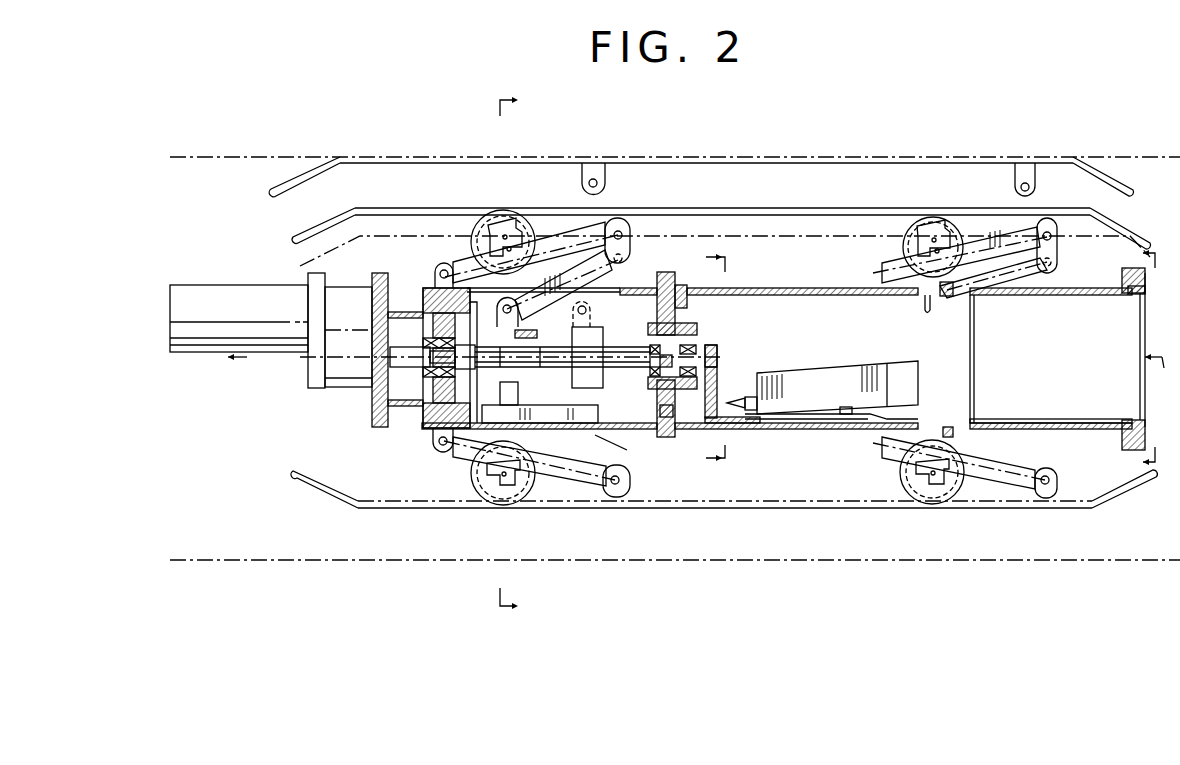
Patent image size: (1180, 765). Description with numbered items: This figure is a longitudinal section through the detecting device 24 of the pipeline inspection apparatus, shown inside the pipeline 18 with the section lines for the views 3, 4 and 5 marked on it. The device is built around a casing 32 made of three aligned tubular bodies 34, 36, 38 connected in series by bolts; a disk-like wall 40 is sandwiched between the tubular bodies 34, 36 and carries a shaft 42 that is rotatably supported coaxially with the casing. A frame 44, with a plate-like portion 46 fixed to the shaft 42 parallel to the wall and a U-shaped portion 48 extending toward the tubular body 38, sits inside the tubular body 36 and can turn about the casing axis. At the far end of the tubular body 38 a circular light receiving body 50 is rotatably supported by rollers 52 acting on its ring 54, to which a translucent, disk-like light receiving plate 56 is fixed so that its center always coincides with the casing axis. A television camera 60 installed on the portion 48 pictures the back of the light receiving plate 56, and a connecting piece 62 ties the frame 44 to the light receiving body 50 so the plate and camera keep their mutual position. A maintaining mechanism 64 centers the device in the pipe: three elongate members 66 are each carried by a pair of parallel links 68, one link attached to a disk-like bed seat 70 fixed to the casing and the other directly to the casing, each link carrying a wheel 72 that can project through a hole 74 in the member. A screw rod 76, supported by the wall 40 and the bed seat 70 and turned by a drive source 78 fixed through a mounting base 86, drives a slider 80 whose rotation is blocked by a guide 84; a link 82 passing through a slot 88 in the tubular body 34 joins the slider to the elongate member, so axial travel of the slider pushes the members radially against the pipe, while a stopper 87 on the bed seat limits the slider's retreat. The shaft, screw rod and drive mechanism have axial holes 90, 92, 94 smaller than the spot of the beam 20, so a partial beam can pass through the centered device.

The section line 3- 3 is at (706, 359).
The section line 4- 4 is at (1147, 358).
The section line 5- 5 is at (520, 354).
The pipeline 18 is at (255, 163).
The beam 20 is at (250, 358).
The detecting device 24 is at (848, 185).
The casing 32 is at (823, 286).
The tubular body 34 is at (639, 434).
The tubular body 36 is at (833, 429).
The tubular body 38 is at (1063, 429).
The wall 40 is at (662, 271).
The shaft 42 is at (698, 344).
The frame 44 is at (757, 430).
The plate-like portion 46 is at (717, 388).
The U-shaped section portion 48 is at (795, 429).
The light receiving body 50 is at (1149, 333).
The rollers 52 is at (1130, 268).
The ring 54 is at (1130, 296).
The light receiving plate 56 is at (1138, 377).
The television camera 60 is at (848, 373).
The connecting piece 62 is at (1032, 419).
The maintaining mechanism 64 is at (377, 432).
The elongate member 66 is at (367, 157).
The parallel links 68 is at (557, 242).
The bed seat 70 is at (440, 284).
The wheel 72 is at (491, 228).
The hole 74 is at (536, 218).
The screw rod 76 is at (624, 351).
The drive source 78 is at (288, 348).
The slider 80 is at (519, 312).
The link 82 is at (627, 282).
The guide 84 is at (537, 416).
The mounting base 86 is at (390, 273).
The stopper 87 is at (474, 429).
The slot 88 is at (618, 291).
The hole 90 is at (717, 356).
The hole 92 is at (601, 373).
The hole 94 is at (344, 362).